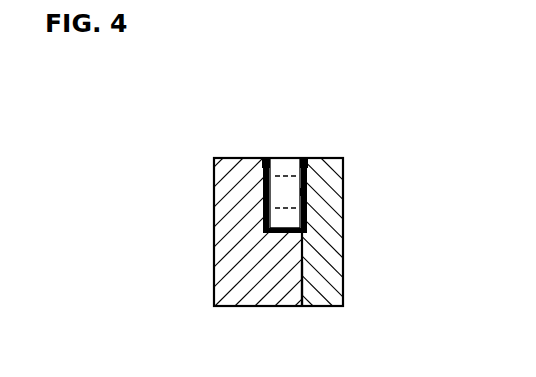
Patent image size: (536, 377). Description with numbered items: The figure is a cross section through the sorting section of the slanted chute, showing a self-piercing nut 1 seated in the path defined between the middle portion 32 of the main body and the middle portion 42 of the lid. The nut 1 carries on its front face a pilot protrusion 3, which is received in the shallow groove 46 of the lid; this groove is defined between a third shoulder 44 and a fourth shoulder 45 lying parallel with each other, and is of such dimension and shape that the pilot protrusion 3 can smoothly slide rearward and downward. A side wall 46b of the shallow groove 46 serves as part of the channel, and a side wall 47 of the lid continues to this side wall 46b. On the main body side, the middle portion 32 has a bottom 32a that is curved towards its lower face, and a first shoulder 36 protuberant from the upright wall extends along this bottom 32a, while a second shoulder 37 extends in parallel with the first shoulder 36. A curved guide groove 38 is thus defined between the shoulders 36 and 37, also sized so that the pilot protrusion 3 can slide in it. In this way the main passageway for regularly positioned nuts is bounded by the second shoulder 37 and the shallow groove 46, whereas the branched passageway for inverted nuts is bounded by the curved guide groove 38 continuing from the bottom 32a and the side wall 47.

The self-piercing nut 1 is at (283, 157).
The pilot protrusion 3 is at (228, 157).
The middle portion 32 is at (214, 220).
The bottom 32a is at (281, 233).
The first shoulder 36 is at (262, 232).
The second shoulder 37 is at (246, 129).
The curved guide groove 38 is at (262, 192).
The middle portion 42 is at (333, 235).
The third shoulder 44 is at (305, 237).
The fourth shoulder 45 is at (307, 158).
The shallow groove 46 is at (345, 158).
The side wall 46b is at (307, 197).
The side wall 47 is at (301, 265).